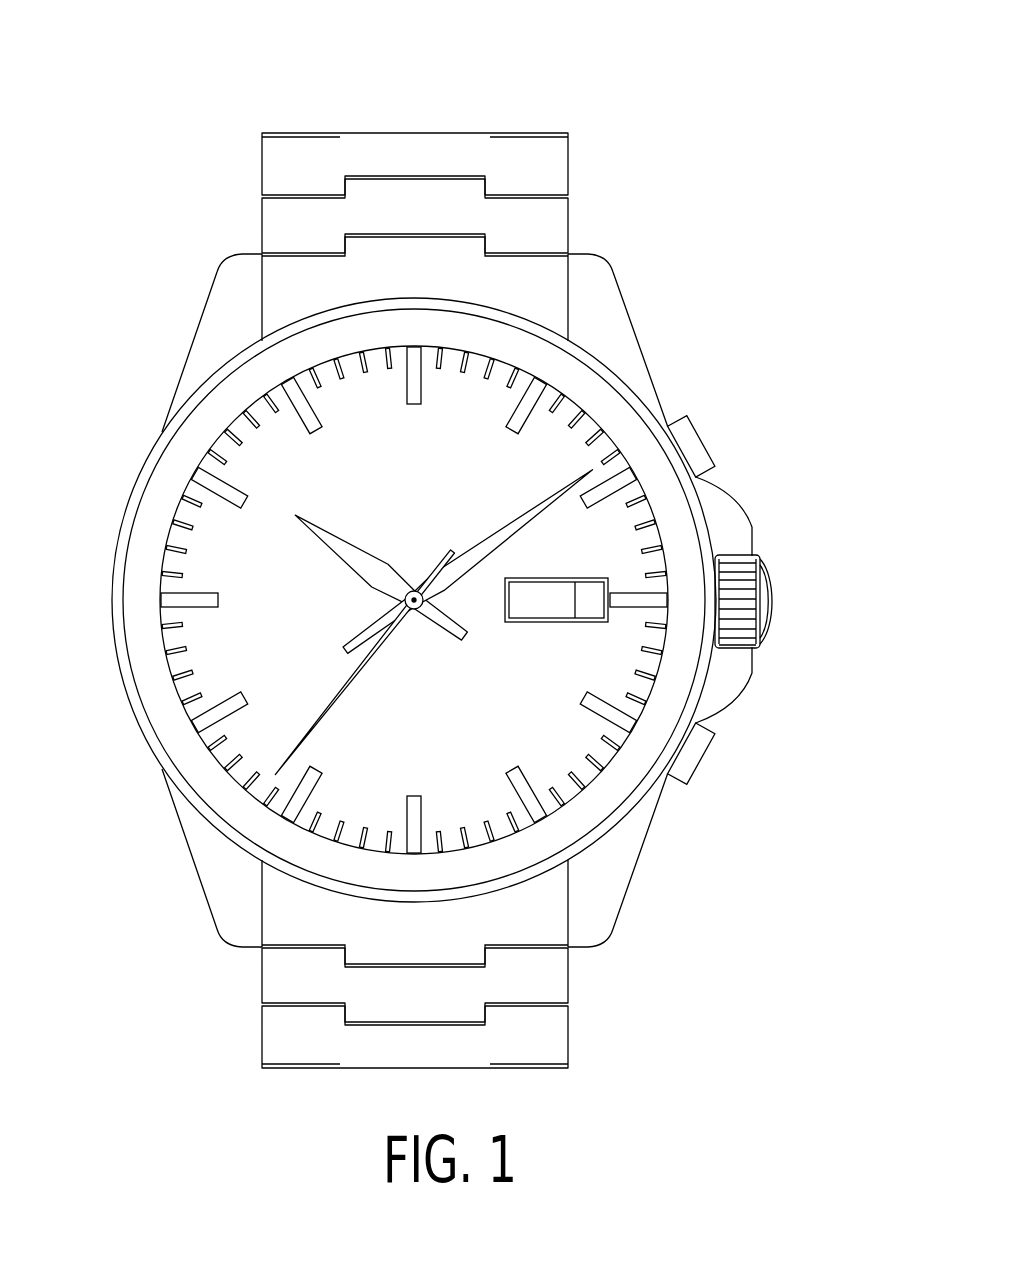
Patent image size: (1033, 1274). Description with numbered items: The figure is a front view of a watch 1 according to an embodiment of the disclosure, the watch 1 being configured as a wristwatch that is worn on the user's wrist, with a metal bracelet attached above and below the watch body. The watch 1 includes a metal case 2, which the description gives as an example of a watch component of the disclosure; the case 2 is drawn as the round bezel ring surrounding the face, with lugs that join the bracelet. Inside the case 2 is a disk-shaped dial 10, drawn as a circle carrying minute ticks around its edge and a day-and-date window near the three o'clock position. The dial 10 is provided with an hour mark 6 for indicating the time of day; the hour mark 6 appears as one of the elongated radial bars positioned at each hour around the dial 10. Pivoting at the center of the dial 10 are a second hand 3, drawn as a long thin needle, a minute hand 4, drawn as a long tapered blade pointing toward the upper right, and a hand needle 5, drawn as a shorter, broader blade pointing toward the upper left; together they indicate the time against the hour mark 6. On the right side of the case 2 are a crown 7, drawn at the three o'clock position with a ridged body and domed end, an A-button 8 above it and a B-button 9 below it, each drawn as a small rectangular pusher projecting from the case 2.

The watch 1 is at (661, 80).
The case 2 is at (170, 477).
The second hand 3 is at (330, 713).
The minute hand 4 is at (525, 518).
The hand needle 5 is at (353, 542).
The hour mark 6 is at (540, 420).
The crown 7 is at (773, 603).
The A-button 8 is at (700, 440).
The B-button 9 is at (702, 762).
The dial 10 is at (257, 447).